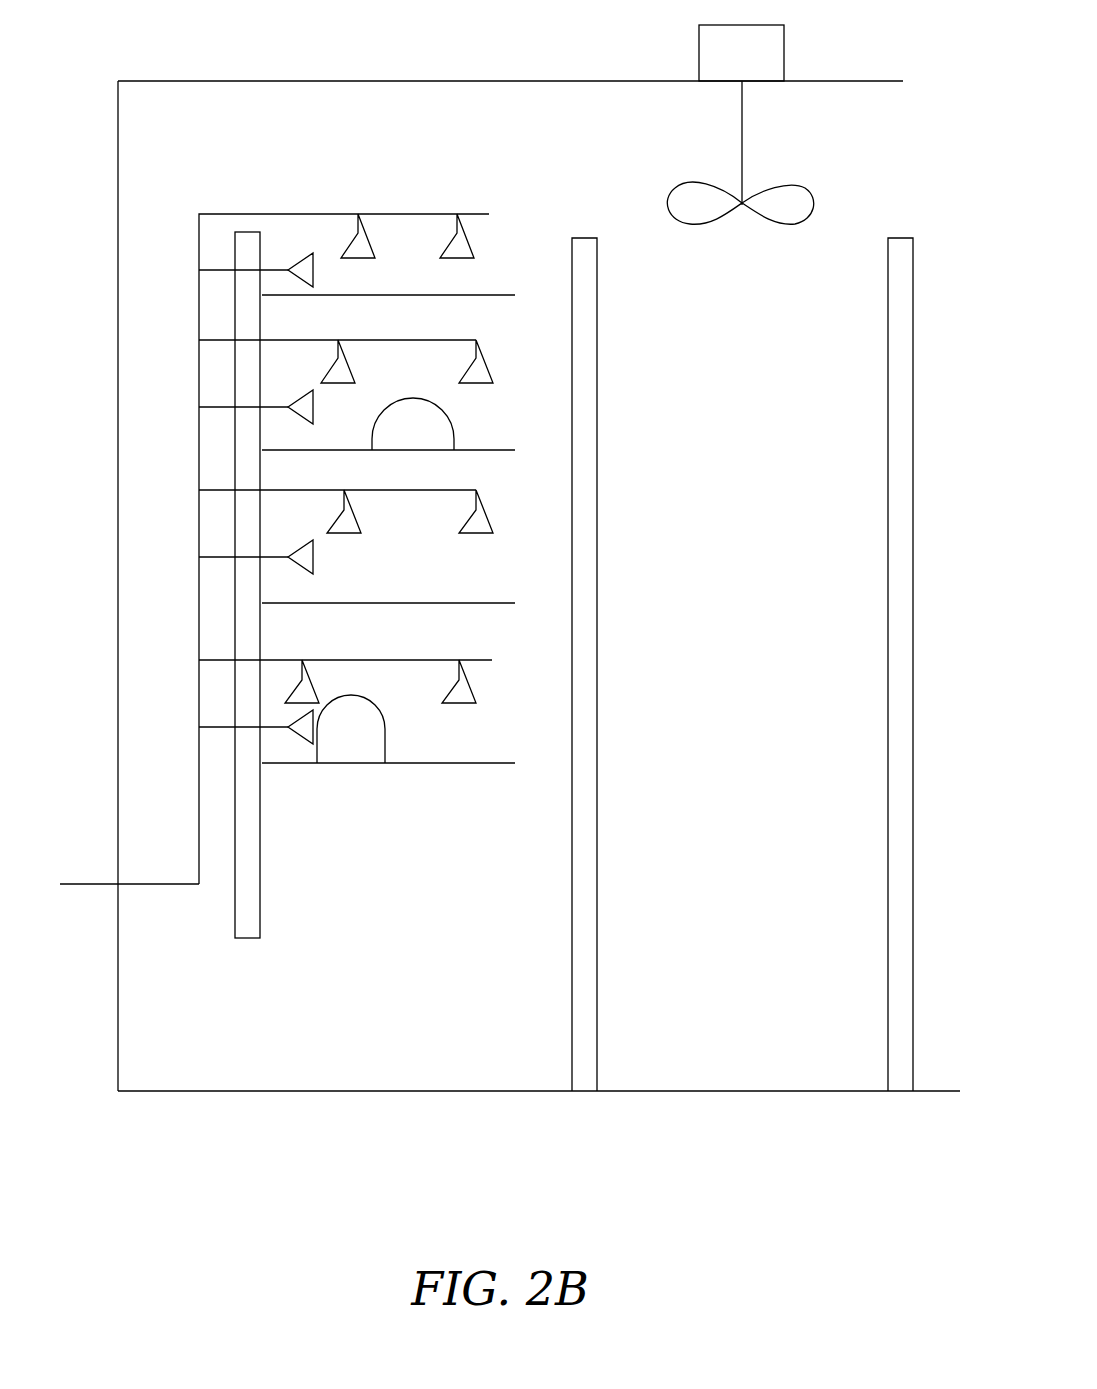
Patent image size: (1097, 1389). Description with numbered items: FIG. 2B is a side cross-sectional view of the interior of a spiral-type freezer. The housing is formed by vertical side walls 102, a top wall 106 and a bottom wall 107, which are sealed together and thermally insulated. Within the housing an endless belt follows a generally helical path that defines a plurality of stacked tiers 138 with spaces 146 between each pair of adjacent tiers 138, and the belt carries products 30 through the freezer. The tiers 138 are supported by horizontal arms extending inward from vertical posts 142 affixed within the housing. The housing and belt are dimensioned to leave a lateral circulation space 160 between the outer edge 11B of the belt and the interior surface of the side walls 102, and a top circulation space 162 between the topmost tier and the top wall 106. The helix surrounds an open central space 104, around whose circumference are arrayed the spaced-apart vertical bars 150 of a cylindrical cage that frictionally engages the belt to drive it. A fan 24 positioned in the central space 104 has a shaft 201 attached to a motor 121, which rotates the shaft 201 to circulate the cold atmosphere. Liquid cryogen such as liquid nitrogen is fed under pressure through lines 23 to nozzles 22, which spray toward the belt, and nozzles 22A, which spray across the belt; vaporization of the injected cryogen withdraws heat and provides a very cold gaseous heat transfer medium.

The vertical side wall 102 is at (118, 155).
The top wall 106 is at (416, 81).
The bottom wall 107 is at (507, 1091).
The top circulation space 162 is at (336, 145).
The lateral circulation space 160 is at (138, 435).
The cryogen line 23 is at (199, 797).
The vertical post 142 is at (246, 245).
The nozzle oriented across belt 22A is at (288, 268).
The nozzle oriented toward belt 22 is at (372, 250).
The tier 138 is at (515, 295).
The outer edge of belt 11B is at (262, 303).
The space between tiers 146 is at (383, 389).
The product 30 is at (399, 439).
The motor 121 is at (722, 67).
The shaft 201 is at (742, 140).
The fan 24 is at (776, 215).
The vertical bar 150 is at (583, 277).
The open central space 104 is at (724, 334).